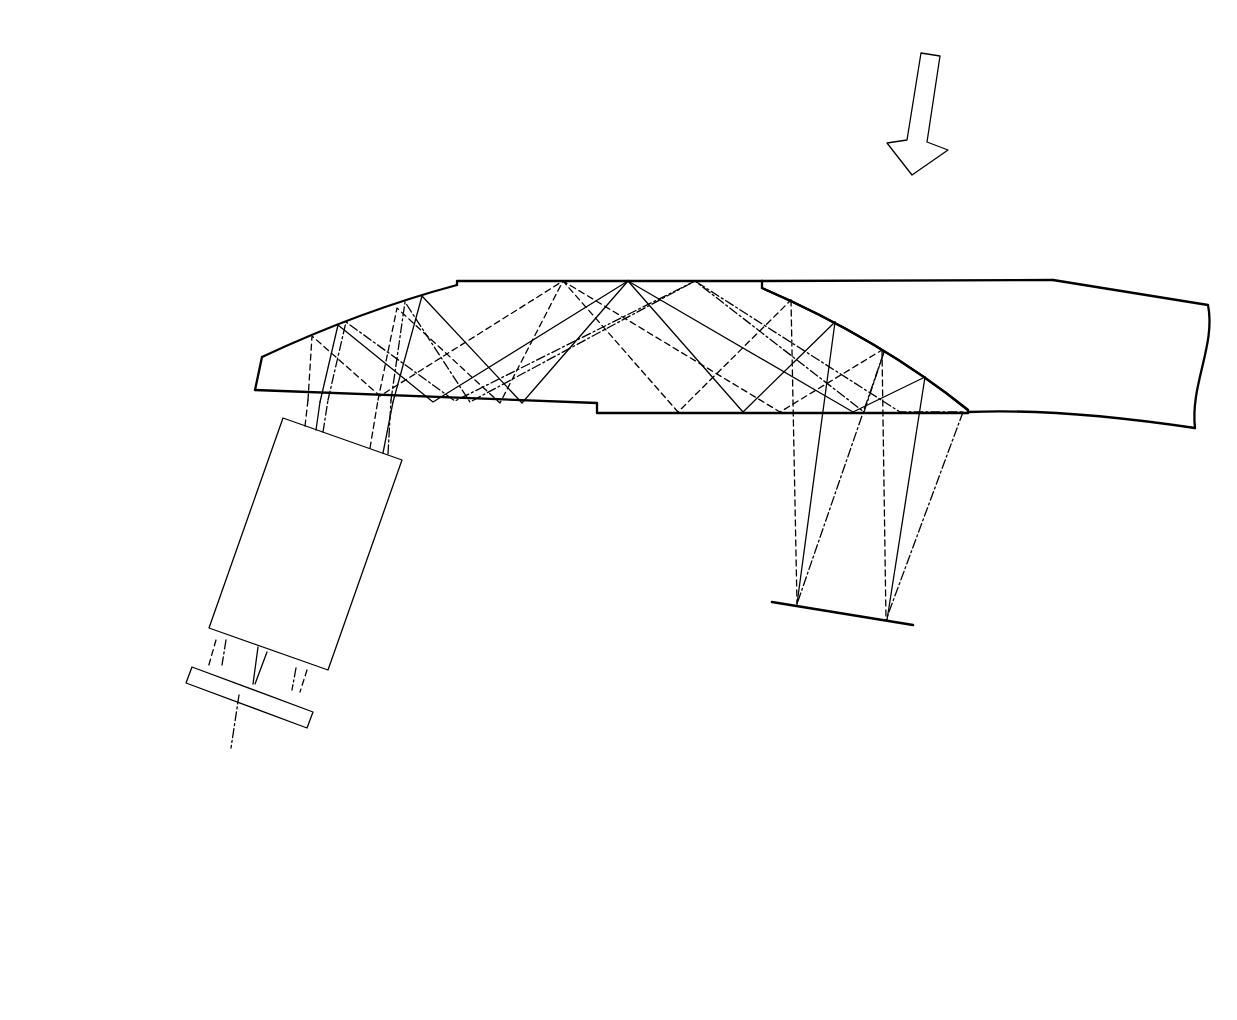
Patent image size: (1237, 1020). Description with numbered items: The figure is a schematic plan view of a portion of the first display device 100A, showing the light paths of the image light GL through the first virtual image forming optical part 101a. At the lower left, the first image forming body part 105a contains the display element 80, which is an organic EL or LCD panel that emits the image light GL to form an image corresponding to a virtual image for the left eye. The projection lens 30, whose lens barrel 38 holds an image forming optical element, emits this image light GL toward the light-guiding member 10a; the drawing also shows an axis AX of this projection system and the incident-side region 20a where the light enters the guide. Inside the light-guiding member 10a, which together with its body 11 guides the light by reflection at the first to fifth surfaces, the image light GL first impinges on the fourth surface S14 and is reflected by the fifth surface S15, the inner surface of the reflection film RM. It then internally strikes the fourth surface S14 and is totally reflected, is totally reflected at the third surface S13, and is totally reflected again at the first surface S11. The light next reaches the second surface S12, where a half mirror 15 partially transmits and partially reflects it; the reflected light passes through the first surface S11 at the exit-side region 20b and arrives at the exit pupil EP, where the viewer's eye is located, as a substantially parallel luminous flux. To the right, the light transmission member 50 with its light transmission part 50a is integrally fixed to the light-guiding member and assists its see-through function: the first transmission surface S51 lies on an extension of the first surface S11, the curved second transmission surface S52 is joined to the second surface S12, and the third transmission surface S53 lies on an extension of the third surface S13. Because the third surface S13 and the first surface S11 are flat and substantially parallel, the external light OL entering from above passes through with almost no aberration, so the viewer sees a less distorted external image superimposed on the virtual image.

The first display device 100A is at (277, 76).
The first virtual image forming optical part 101a is at (498, 258).
The light-guiding member 10a is at (583, 453).
The light guide body 11 is at (735, 295).
The first surface S11 is at (753, 416).
The second surface S12 is at (865, 317).
The half mirror 15 is at (862, 340).
The third surface S13 is at (612, 278).
The fourth surface S14 is at (447, 408).
The fifth surface S15 is at (359, 293).
The reflection film RM is at (340, 330).
The light transmitting member 50 is at (1086, 233).
The light transmission part 50a is at (1003, 292).
The first transmission surface S51 is at (988, 416).
The second transmission surface S52 is at (828, 318).
The third transmission surface S53 is at (970, 278).
The light incident portion 20a is at (318, 407).
The light emitting portion 20b is at (892, 413).
The projection lens 30 is at (333, 544).
The lens barrel 38 is at (365, 568).
The display element 80 is at (258, 713).
The first image forming body part 105a is at (218, 530).
The image light GL is at (377, 433).
The external light OL is at (922, 98).
The optical axis AX is at (230, 727).
The exit pupil EP is at (838, 614).